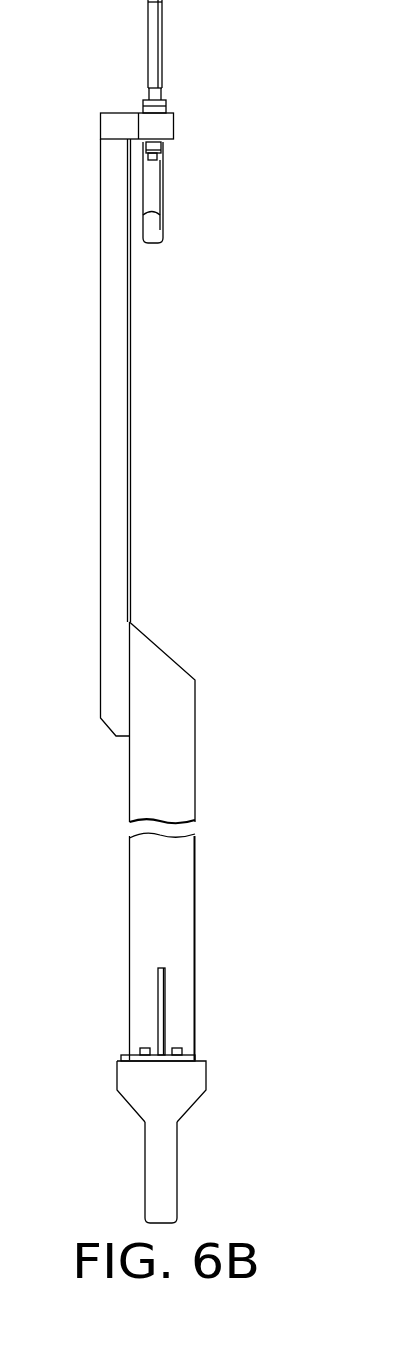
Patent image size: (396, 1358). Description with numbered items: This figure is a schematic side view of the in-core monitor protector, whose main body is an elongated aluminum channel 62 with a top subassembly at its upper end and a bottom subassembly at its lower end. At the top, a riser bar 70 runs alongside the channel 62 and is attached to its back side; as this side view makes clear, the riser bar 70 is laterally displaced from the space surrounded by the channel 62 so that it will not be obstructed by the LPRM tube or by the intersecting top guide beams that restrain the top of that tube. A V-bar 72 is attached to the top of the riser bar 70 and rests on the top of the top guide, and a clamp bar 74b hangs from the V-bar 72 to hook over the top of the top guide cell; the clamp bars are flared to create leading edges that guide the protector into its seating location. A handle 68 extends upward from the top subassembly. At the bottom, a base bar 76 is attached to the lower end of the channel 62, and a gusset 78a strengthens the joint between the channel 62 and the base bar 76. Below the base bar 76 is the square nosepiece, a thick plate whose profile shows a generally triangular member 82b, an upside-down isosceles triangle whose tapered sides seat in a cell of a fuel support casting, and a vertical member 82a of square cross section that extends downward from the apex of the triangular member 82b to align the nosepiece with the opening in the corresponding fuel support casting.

The handle 68 is at (162, 15).
The V-bar 72 is at (118, 127).
The clamp bar 74b is at (165, 183).
The riser bar 70 is at (131, 440).
The aluminum channel 62 is at (195, 800).
The gusset 78a is at (166, 1000).
The base bar 76 is at (121, 1057).
The generally triangular member 82b is at (197, 1107).
The vertical member 82a is at (175, 1155).